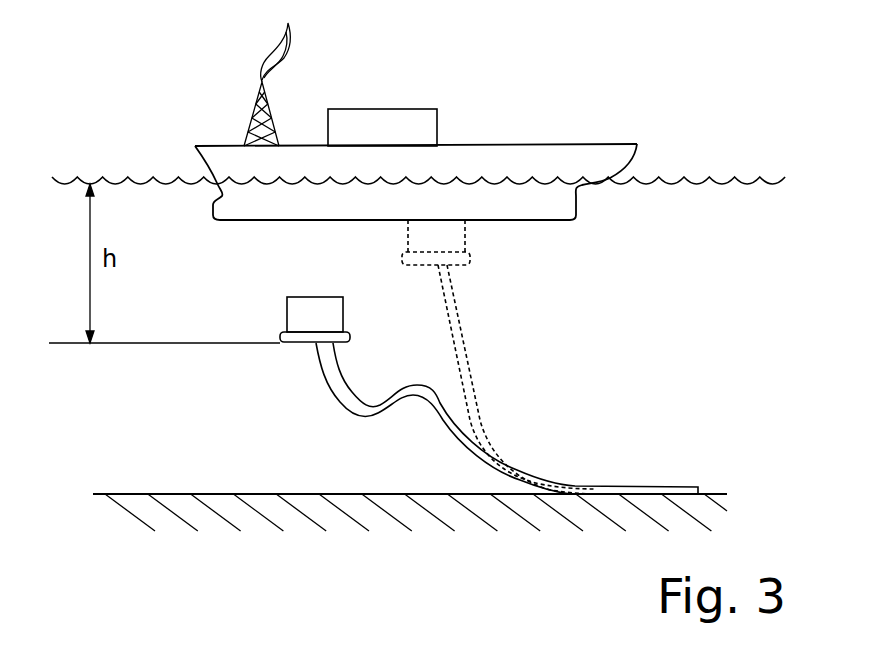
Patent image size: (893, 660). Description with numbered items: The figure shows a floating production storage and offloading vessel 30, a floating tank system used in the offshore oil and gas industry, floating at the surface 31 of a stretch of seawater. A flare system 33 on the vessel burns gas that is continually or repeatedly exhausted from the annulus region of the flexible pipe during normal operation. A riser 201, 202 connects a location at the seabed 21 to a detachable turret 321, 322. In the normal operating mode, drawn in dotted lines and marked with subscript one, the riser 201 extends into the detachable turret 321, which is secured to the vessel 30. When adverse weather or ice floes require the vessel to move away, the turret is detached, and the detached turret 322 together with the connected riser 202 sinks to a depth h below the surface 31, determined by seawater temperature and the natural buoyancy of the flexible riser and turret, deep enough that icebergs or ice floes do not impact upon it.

The floating production storage and offloading (FPSO) vessel 30 is at (508, 155).
The surface 31 is at (697, 178).
The flare system 33 is at (263, 93).
The detachable turret (normal operating mode) 321 is at (407, 243).
The detached turret 322 is at (298, 317).
The riser (normal operating mode) 201 is at (452, 291).
The riser (detached mode) 202 is at (440, 397).
The seabed 21 is at (402, 566).